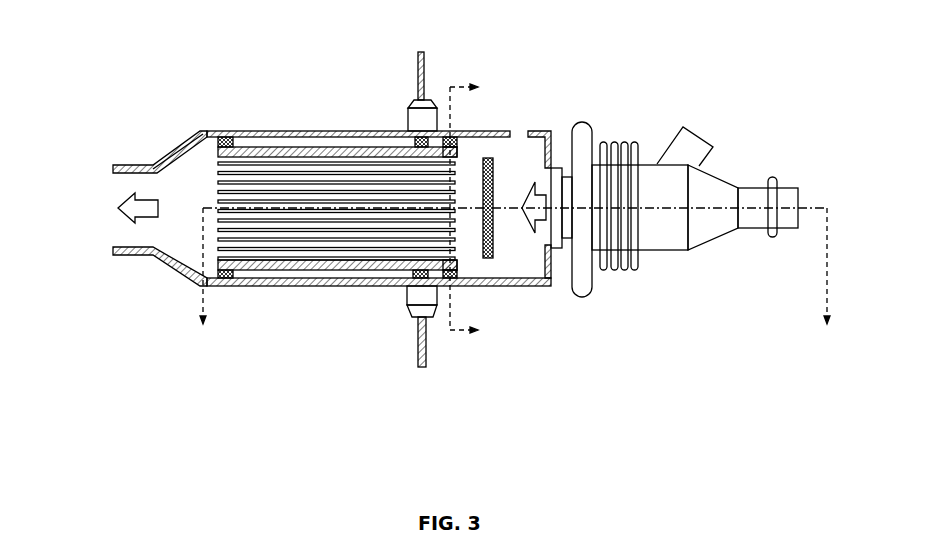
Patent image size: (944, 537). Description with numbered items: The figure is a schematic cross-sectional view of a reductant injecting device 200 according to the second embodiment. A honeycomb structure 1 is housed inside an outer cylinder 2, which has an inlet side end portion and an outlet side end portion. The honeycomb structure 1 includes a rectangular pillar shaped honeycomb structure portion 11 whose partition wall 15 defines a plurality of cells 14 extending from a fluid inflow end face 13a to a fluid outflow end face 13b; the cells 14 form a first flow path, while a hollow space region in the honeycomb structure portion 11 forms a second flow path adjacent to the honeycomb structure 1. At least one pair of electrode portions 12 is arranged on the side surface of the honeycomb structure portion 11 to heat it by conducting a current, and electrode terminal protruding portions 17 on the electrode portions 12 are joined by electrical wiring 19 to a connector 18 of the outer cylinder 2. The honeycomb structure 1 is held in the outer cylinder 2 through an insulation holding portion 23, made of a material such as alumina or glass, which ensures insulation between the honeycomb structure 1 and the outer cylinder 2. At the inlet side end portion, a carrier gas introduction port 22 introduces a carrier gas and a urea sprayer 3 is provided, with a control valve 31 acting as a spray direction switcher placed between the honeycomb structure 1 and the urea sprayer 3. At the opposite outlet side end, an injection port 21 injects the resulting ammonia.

The reductant injecting device 200 is at (445, 479).
The honeycomb structure 1 is at (335, 431).
The outer cylinder 2 is at (310, 131).
The urea sprayer 3 is at (652, 200).
The honeycomb structure portion 11 is at (298, 392).
The electrode portions 12 is at (322, 270).
The fluid inflow end face 13a is at (457, 252).
The fluid outflow end face 13b is at (205, 130).
The cells 14 is at (282, 242).
The partition wall 15 is at (247, 251).
The electrode terminal protruding portions 17 is at (405, 129).
The connector 18 is at (411, 293).
The electrical wiring 19 is at (427, 350).
The injection port 21 is at (130, 230).
The carrier gas introduction port 22 is at (520, 140).
The insulation holding portion 23 is at (225, 131).
The control valve 31 is at (492, 158).